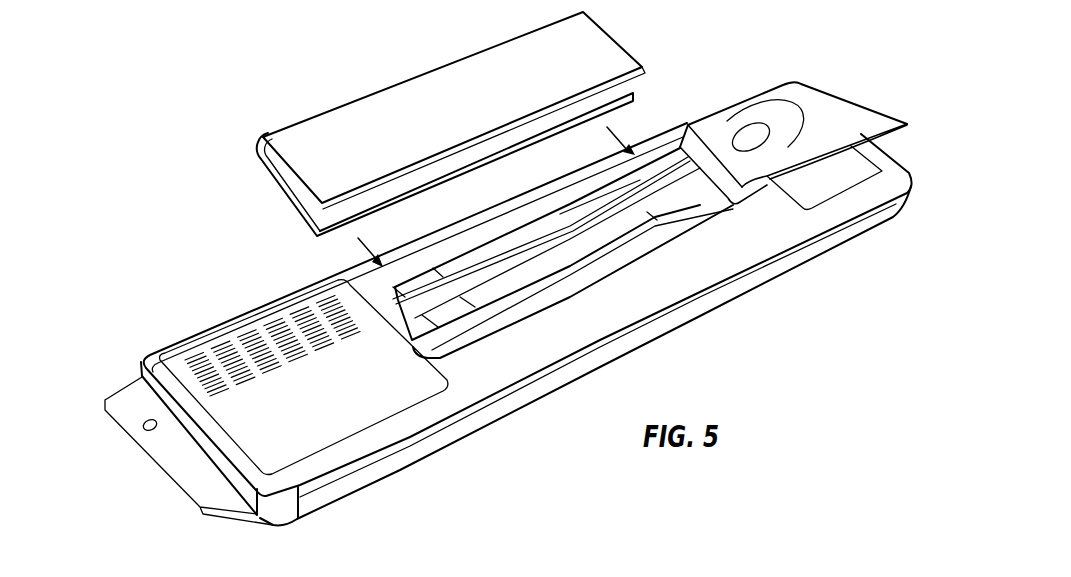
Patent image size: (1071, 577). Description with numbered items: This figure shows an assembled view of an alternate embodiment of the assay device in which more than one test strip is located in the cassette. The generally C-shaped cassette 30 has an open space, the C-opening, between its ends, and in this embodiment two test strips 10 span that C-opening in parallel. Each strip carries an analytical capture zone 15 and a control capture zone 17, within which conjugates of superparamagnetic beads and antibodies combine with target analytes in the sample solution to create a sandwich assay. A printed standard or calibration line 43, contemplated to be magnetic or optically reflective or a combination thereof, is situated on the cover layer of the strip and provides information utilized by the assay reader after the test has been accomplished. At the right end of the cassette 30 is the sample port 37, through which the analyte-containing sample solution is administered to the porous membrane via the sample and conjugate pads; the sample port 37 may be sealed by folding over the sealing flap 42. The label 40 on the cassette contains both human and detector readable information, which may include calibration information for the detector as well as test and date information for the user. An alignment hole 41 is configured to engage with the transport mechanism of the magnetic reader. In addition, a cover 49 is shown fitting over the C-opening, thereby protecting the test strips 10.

The test strip 10 is at (542, 272).
The analytical capture zone 15 is at (622, 194).
The control capture zone 17 is at (436, 273).
The cassette 30 is at (196, 206).
The sample port 37 is at (757, 130).
The label 40 is at (358, 423).
The alignment hole 41 is at (143, 426).
The sealing flap 42 is at (905, 124).
The printed standard or calibration line 43 is at (400, 291).
The cover 49 is at (372, 102).